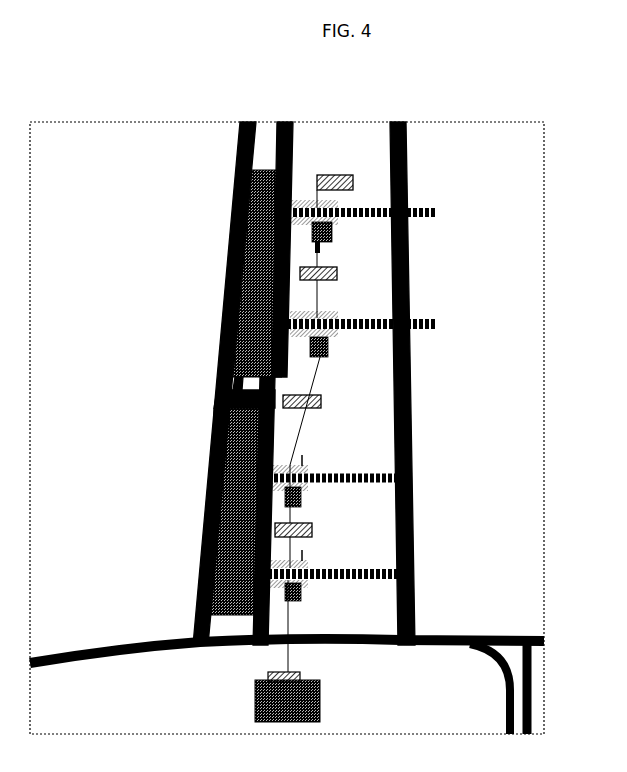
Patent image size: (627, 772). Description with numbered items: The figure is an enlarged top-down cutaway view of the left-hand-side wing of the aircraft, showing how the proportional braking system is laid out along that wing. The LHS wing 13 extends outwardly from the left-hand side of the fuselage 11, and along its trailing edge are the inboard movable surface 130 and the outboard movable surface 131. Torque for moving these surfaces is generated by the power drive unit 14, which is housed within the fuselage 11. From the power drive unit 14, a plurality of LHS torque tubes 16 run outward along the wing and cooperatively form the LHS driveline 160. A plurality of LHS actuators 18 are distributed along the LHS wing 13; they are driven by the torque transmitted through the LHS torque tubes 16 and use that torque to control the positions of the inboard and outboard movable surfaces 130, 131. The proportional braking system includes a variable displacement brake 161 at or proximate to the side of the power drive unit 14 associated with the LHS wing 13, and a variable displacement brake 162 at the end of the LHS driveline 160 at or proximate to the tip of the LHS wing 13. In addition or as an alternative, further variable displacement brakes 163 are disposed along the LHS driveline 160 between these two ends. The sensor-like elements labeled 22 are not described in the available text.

The fuselage 11 is at (98, 677).
The LHS wing 13 is at (382, 617).
The power drive unit 14 is at (388, 692).
The LHS torque tubes 16 is at (215, 615).
The LHS actuators 18 is at (237, 300).
The sensor modules 22 is at (303, 590).
The inboard movable surface 130 is at (213, 452).
The outboard movable surface 131 is at (240, 212).
The LHS driveline 160 is at (429, 403).
The variable displacement brake 161 is at (268, 675).
The variable displacement brake 162 is at (331, 175).
The variable displacement brakes 163 is at (338, 276).